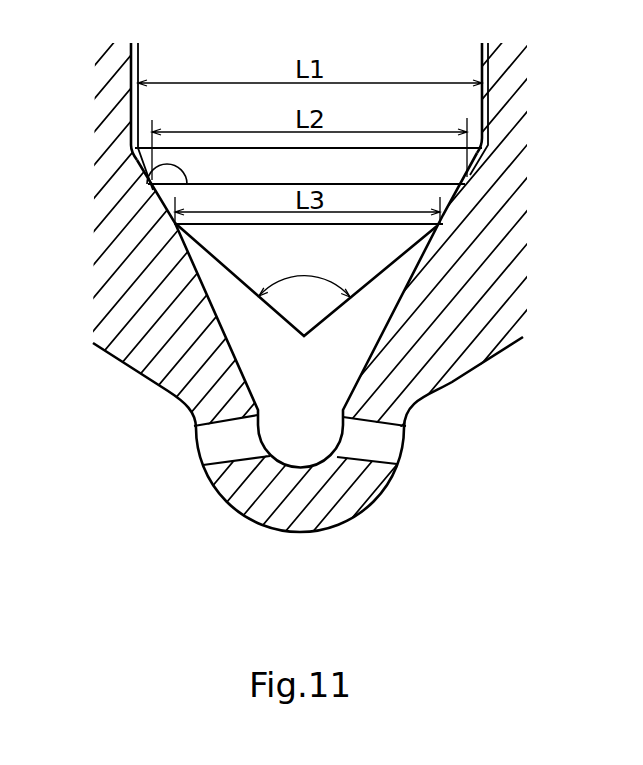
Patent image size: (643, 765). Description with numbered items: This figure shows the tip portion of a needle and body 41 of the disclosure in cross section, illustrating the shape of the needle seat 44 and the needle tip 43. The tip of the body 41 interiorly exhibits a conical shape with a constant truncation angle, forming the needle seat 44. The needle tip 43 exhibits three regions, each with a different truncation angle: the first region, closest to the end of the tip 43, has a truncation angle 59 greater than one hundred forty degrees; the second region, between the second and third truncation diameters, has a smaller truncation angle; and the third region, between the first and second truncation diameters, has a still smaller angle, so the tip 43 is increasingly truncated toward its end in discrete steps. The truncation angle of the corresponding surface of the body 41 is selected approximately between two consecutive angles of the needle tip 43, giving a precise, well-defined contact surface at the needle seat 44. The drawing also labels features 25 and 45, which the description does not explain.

The nozzle 25 is at (558, 147).
The body 41 is at (490, 330).
The needle tip 43 is at (143, 165).
The needle seat 44 is at (145, 205).
The land 45 is at (213, 446).
The truncation angle 59 is at (310, 275).